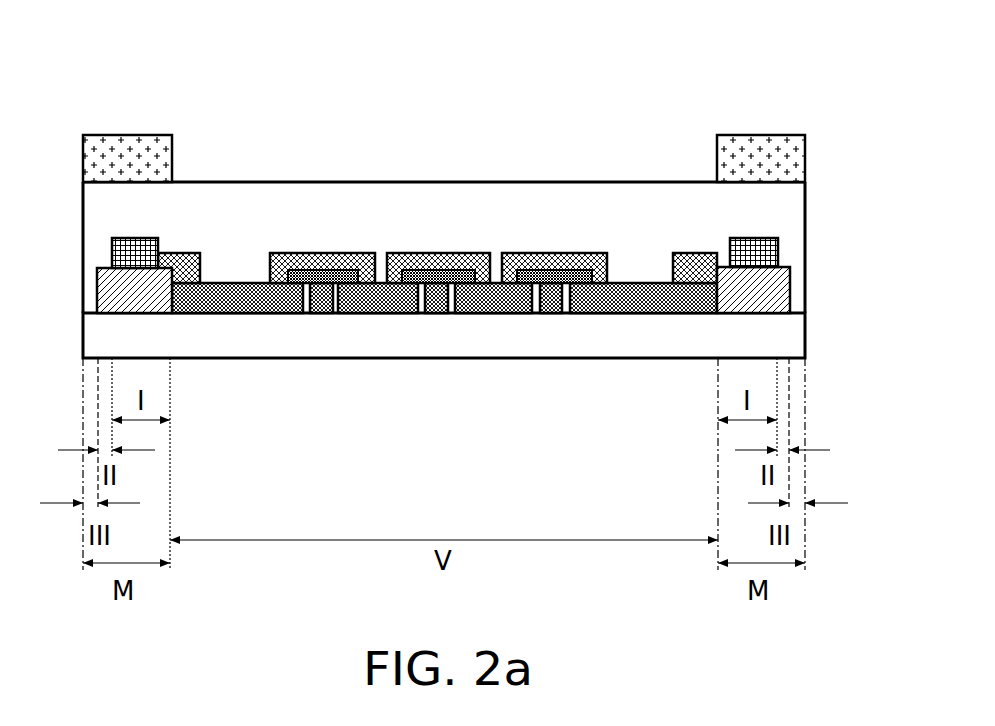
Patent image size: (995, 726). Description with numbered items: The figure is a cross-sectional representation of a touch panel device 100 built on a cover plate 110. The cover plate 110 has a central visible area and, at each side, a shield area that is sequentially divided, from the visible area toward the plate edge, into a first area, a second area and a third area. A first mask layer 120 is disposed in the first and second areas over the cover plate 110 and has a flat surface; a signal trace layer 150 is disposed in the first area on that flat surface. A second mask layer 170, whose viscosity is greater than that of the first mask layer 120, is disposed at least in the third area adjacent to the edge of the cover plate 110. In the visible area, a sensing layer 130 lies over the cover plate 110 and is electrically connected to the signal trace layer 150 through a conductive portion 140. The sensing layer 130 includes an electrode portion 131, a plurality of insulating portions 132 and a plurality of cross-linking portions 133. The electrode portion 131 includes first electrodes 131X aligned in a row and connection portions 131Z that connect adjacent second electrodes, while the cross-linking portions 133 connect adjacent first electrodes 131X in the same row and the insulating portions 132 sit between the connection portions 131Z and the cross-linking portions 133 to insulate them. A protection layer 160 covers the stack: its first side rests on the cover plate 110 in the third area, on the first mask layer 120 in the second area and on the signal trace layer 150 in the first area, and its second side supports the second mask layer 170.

The touch panel device 100 is at (734, 92).
The cover plate 110 is at (663, 333).
The first mask layer 120 is at (97, 295).
The sensing layer 130 is at (367, 400).
The electrode portion 131 is at (278, 372).
The first electrodes 131X is at (213, 318).
The connection portions 131Z is at (347, 345).
The insulating portions 132 is at (435, 317).
The cross-linking portions 133 is at (494, 345).
The conductive portion 140 is at (648, 300).
The signal trace layer 150 is at (138, 238).
The protection layer 160 is at (661, 195).
The second mask layer 170 is at (120, 150).